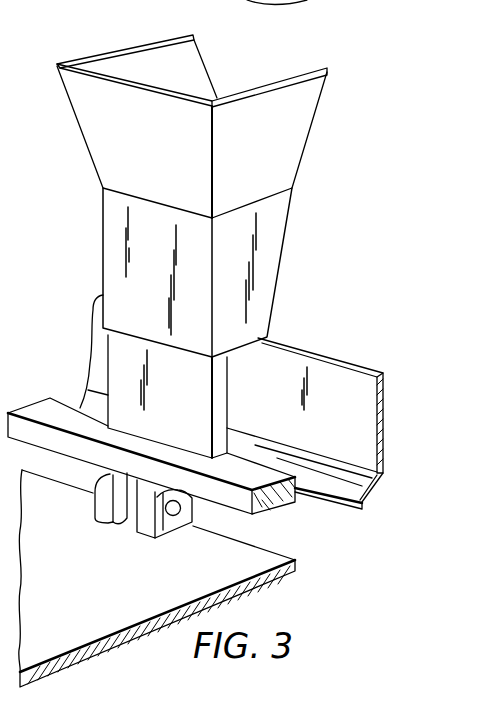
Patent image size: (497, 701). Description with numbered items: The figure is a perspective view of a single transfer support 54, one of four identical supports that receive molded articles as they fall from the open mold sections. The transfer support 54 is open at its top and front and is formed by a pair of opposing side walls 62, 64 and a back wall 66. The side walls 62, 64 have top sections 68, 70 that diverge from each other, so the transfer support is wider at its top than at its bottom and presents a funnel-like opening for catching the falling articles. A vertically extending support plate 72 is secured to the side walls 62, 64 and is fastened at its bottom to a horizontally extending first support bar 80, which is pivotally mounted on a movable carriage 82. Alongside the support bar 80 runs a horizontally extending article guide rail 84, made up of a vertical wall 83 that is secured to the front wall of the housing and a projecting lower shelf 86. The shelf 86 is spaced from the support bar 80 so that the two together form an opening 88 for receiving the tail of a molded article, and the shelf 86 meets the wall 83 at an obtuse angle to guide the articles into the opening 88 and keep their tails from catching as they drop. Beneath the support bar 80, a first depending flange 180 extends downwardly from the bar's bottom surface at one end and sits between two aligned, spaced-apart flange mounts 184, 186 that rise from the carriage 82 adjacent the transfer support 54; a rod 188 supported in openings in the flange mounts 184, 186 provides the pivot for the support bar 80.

The transfer support 54 is at (257, 287).
The side wall 62 is at (270, 221).
The side wall 64 is at (183, 63).
The back wall 66 is at (118, 220).
The top section 68 is at (292, 128).
The top section 70 is at (142, 56).
The support plate 72 is at (195, 393).
The first support bar 80 is at (247, 500).
The carriage 82 is at (148, 610).
The vertical wall 83 is at (363, 408).
The article guide rail 84 is at (358, 447).
The lower shelf 86 is at (380, 490).
The opening 88 is at (297, 497).
The first depending flange 180 is at (130, 518).
The flange mount 184 is at (162, 528).
The flange mount 186 is at (107, 513).
The rod 188 is at (177, 508).